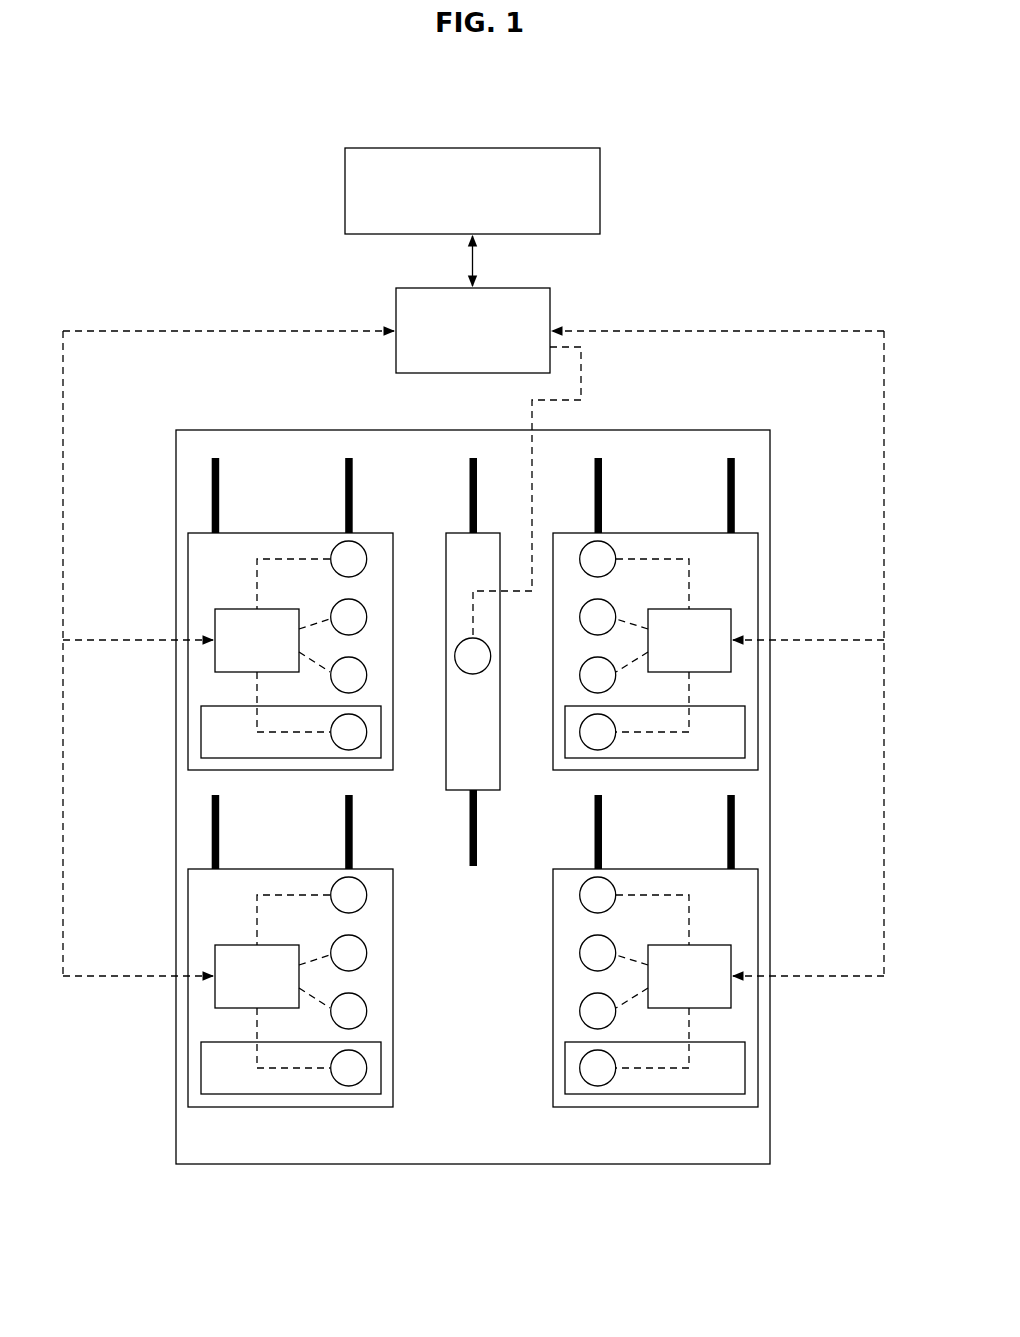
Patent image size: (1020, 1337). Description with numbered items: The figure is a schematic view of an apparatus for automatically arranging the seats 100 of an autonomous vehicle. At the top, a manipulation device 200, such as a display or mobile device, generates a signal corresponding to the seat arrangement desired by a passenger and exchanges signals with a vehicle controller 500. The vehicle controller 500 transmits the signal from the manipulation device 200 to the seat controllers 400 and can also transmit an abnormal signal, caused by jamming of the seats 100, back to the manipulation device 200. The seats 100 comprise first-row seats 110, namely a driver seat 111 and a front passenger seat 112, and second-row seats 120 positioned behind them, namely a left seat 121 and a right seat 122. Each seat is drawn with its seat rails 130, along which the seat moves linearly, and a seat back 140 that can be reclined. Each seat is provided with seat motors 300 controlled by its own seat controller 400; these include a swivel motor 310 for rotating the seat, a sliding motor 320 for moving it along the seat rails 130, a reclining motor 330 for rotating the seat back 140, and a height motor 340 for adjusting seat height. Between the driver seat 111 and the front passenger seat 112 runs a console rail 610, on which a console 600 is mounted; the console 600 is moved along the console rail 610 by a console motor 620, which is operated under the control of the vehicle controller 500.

The seats 100 is at (758, 528).
The first-row seats 110 is at (762, 543).
The driver seat 111 is at (200, 682).
The front passenger seat 112 is at (745, 682).
The second-row seats 120 is at (276, 1115).
The left seat 121 is at (200, 1018).
The right seat 122 is at (745, 1018).
The seat rails 130 is at (211, 493).
The seat back 140 is at (215, 733).
The manipulation device 200 is at (600, 190).
The seat motors 300 is at (334, 540).
The swivel motor 310 is at (357, 553).
The sliding motor 320 is at (355, 617).
The reclining motor 330 is at (355, 732).
The height motor 340 is at (355, 675).
The seat controllers 400 is at (215, 617).
The vehicle controller 500 is at (550, 298).
The console 600 is at (462, 543).
The console rail 610 is at (474, 456).
The console motor 620 is at (465, 647).